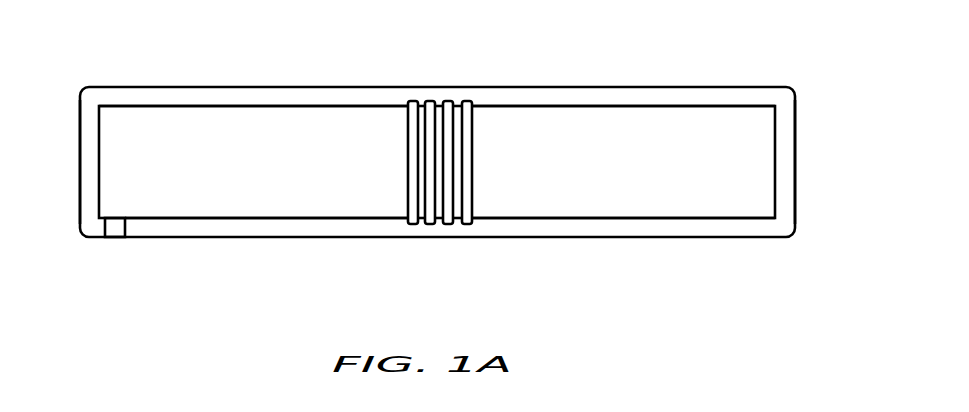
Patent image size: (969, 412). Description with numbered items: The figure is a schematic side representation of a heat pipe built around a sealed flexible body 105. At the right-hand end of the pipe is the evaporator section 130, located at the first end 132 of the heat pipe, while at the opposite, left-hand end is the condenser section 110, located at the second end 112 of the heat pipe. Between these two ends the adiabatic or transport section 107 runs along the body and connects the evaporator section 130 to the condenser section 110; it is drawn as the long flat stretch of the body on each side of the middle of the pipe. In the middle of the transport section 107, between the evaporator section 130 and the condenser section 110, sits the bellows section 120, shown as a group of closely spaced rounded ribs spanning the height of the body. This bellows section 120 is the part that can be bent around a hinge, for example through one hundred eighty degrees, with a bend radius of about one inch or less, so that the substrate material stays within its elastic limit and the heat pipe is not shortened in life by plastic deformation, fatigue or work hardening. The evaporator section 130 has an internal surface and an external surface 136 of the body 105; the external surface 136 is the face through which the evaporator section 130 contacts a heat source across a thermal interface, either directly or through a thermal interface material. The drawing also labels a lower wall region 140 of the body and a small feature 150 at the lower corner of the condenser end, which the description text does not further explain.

The sealed flexible body 105 is at (570, 238).
The transport section 107 is at (295, 110).
The condenser section 110 is at (155, 133).
The second end 112 is at (80, 197).
The bellows section 120 is at (430, 97).
The evaporator section 130 is at (748, 138).
The first end 132 is at (795, 147).
The external surface 136 is at (714, 207).
The housing bottom wall 140 is at (300, 228).
The connector / port 150 is at (117, 226).